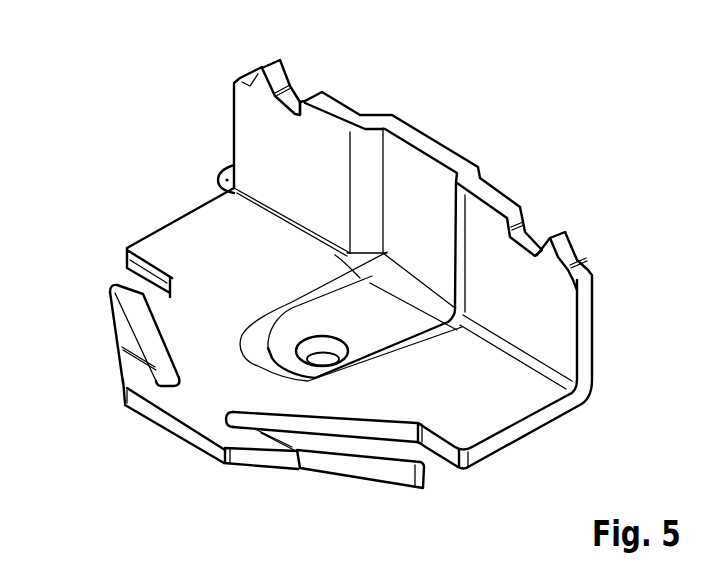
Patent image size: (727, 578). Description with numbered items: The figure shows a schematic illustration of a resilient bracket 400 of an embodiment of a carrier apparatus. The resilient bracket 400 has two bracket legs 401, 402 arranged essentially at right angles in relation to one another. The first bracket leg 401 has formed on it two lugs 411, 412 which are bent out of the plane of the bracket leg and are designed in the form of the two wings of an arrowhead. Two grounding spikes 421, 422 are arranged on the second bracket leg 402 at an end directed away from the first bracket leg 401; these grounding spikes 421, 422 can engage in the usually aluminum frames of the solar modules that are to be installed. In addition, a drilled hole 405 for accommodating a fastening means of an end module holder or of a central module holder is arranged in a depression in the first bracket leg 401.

The resilient bracket 400 is at (455, 92).
The first bracket leg 401 is at (485, 410).
The second bracket leg 402 is at (545, 317).
The drilled hole 405 is at (323, 336).
The lug 411 is at (133, 315).
The lug 412 is at (353, 468).
The grounding spike 421 is at (272, 63).
The grounding spike 422 is at (559, 239).